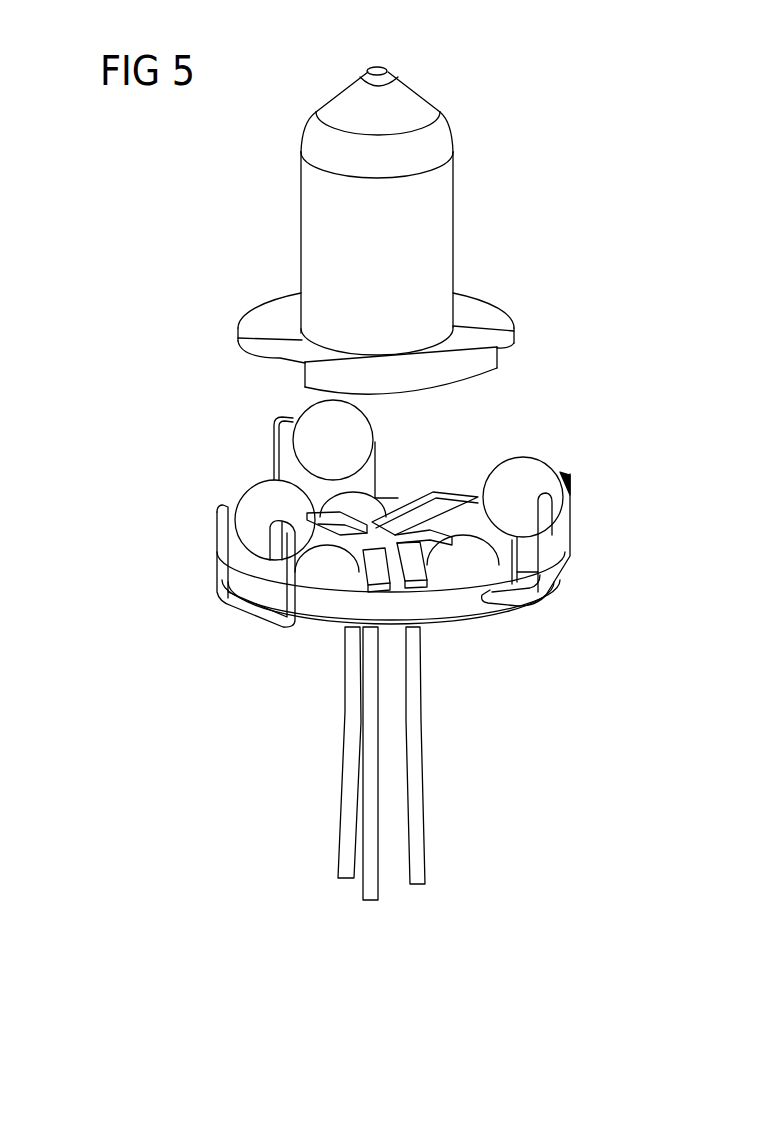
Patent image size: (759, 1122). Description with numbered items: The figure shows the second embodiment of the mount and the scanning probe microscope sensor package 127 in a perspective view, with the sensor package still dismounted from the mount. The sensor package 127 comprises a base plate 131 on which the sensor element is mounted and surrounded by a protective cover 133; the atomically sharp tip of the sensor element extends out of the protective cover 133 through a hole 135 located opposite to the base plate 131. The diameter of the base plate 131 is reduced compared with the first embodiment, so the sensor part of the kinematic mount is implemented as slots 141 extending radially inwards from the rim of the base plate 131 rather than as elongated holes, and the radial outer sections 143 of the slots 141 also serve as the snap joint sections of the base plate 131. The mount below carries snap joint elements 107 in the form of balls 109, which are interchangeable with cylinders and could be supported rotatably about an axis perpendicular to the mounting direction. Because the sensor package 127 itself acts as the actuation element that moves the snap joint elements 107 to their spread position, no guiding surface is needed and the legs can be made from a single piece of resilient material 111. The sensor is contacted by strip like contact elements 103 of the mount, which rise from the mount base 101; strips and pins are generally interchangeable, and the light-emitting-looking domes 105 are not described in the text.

The mount base 101 is at (345, 605).
The strip like contact elements 103 is at (428, 605).
The light emitting diodes 105 is at (310, 566).
The snap joint elements 107 is at (390, 512).
The balls 109 is at (348, 418).
The resilient material 111 is at (275, 428).
The scanning probe microscope sensor package 127 is at (377, 228).
The base plate 131 is at (377, 325).
The protective cover 133 is at (320, 196).
The hole 135 is at (372, 68).
The slots 141 is at (293, 358).
The radial outer sections 143 is at (240, 362).